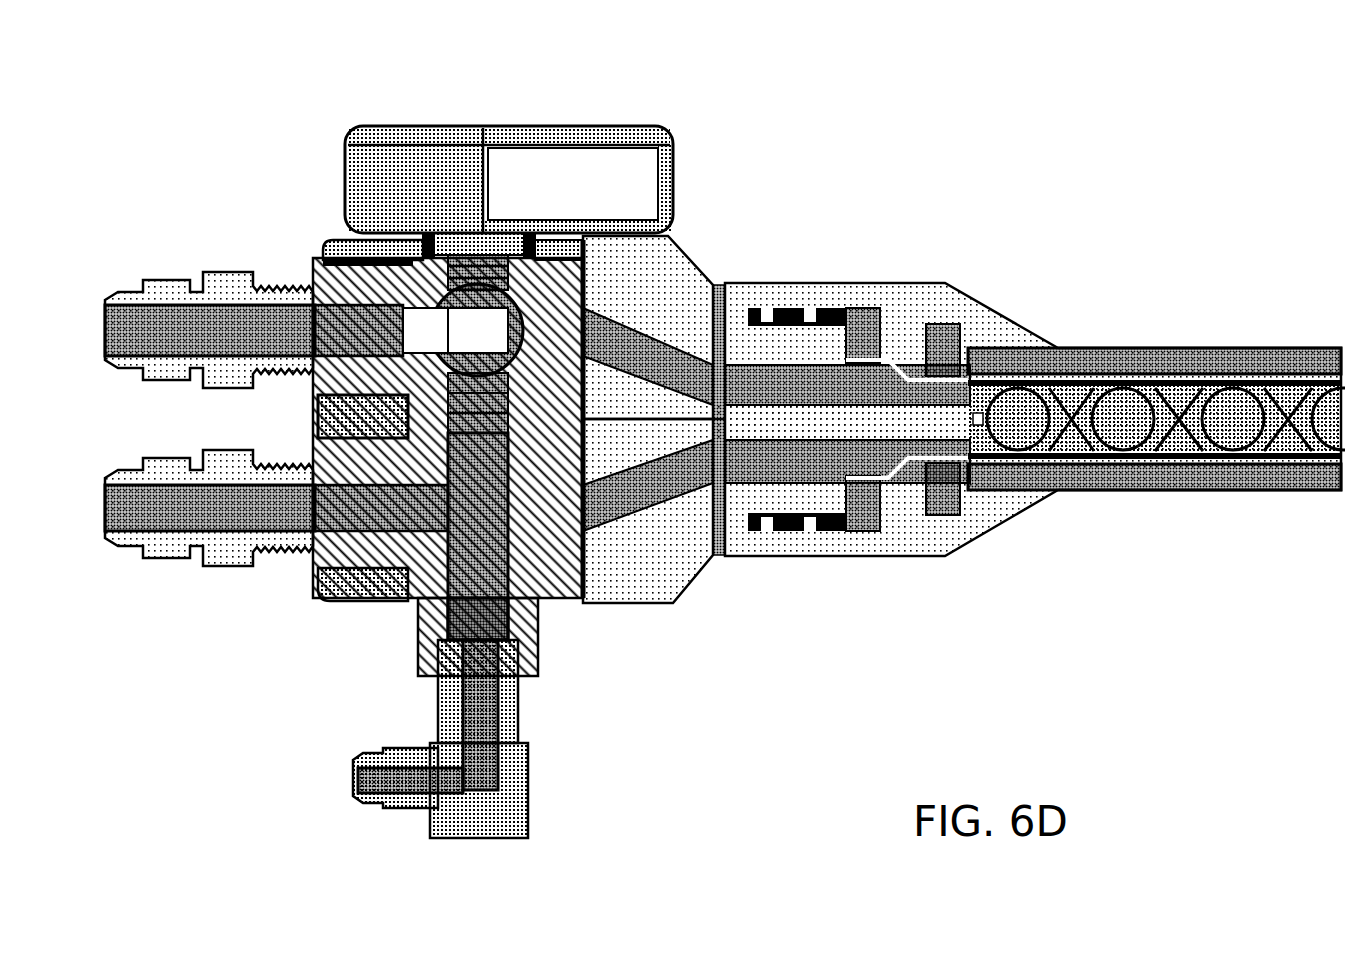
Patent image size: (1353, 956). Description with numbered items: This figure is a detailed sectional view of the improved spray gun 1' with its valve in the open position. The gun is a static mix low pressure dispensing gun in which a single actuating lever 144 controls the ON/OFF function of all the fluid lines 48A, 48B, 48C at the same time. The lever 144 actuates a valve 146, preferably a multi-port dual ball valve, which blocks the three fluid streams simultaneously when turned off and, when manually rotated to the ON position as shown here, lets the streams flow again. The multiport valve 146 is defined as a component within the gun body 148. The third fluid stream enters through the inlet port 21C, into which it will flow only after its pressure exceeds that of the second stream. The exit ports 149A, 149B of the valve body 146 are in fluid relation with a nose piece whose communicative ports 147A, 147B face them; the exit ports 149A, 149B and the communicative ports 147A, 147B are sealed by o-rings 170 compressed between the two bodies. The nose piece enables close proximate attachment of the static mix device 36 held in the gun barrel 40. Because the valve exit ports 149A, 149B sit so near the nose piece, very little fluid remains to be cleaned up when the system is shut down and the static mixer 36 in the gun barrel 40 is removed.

The improved spray gun 1' is at (933, 90).
The actuating lever 144 is at (508, 117).
The gun body 148 is at (318, 236).
The fluid line 48A is at (150, 300).
The fluid line 48B is at (178, 540).
The fluid line 48C is at (520, 775).
The exit port 149A is at (585, 297).
The exit port 149B is at (517, 523).
The communicative port 147A is at (598, 303).
The communicative port 147B is at (577, 505).
The o-rings 170 is at (575, 384).
The static mix device 36 is at (1143, 382).
The gun barrel 40 is at (1200, 482).
The valve 146 is at (520, 560).
The inlet port 21C is at (430, 640).